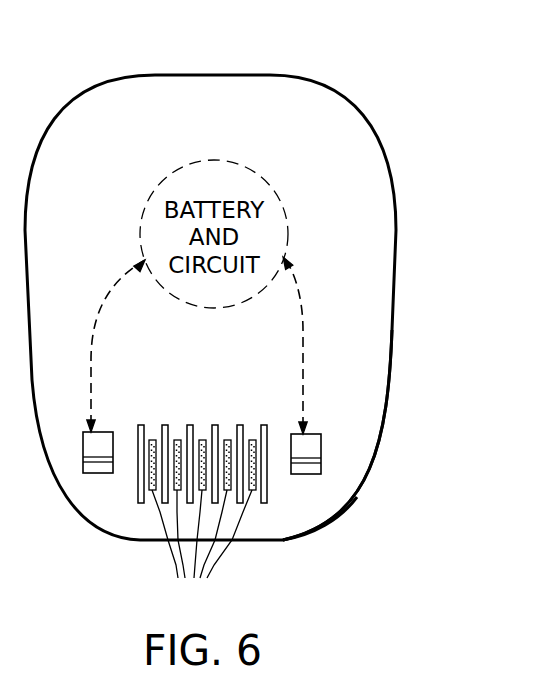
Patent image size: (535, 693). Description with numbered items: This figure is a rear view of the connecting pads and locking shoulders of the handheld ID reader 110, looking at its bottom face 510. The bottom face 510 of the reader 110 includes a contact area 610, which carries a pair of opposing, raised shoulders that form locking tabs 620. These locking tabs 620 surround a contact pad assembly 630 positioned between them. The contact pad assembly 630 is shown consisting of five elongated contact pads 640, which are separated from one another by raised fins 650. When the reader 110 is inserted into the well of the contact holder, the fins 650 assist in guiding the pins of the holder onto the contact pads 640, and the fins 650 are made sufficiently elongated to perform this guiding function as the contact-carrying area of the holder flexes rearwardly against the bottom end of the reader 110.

The reader 110 is at (323, 85).
The bottom face 510 is at (360, 382).
The contact area 610 is at (313, 498).
The locking tabs 620 is at (103, 447).
The contact pad assembly 630 is at (214, 424).
The contact pads 640 is at (202, 523).
The fins 650 is at (190, 427).